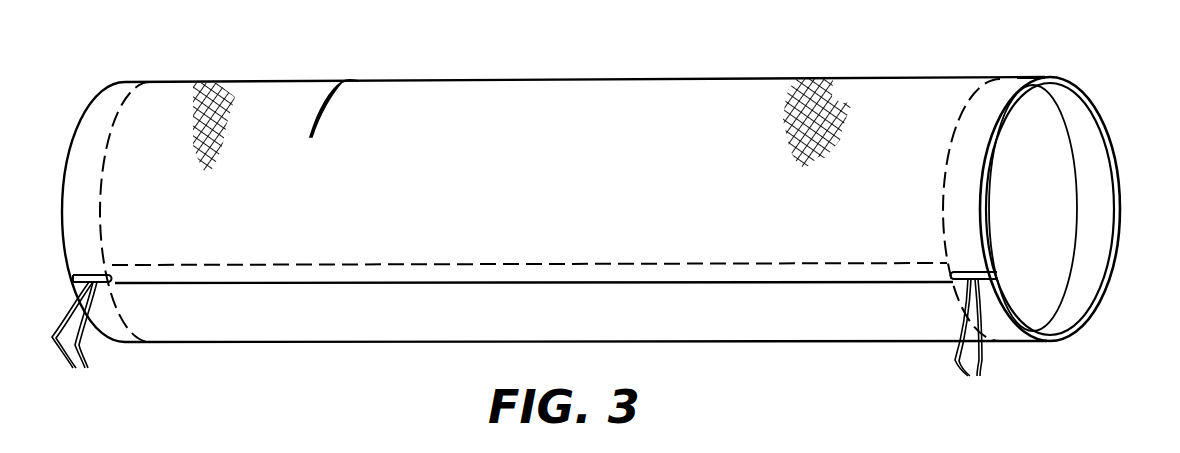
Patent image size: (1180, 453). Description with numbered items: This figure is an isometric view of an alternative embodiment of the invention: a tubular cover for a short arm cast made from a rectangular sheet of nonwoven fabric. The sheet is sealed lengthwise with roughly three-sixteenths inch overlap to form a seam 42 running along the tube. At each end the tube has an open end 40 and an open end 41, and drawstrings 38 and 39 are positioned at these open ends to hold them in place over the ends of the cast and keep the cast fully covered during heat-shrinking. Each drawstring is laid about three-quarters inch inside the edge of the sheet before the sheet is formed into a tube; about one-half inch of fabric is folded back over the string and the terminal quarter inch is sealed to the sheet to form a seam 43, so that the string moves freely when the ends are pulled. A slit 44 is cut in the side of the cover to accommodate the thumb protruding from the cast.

The drawstring 38 is at (82, 343).
The drawstring 39 is at (974, 344).
The open end 40 is at (94, 107).
The open end 41 is at (1093, 110).
The seam 42 is at (745, 283).
The seam 43 is at (965, 103).
The slit 44 is at (341, 83).